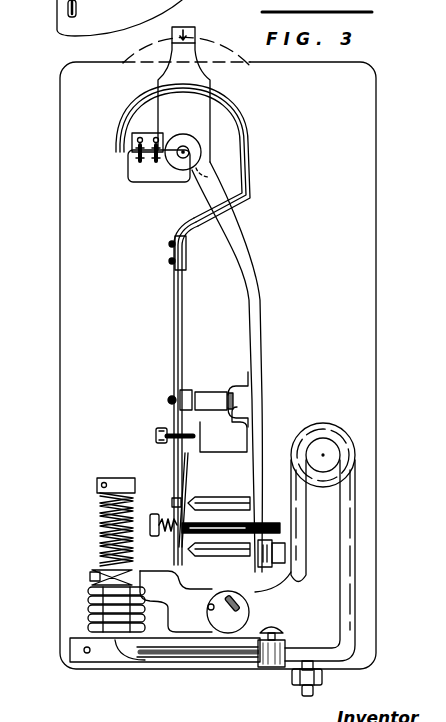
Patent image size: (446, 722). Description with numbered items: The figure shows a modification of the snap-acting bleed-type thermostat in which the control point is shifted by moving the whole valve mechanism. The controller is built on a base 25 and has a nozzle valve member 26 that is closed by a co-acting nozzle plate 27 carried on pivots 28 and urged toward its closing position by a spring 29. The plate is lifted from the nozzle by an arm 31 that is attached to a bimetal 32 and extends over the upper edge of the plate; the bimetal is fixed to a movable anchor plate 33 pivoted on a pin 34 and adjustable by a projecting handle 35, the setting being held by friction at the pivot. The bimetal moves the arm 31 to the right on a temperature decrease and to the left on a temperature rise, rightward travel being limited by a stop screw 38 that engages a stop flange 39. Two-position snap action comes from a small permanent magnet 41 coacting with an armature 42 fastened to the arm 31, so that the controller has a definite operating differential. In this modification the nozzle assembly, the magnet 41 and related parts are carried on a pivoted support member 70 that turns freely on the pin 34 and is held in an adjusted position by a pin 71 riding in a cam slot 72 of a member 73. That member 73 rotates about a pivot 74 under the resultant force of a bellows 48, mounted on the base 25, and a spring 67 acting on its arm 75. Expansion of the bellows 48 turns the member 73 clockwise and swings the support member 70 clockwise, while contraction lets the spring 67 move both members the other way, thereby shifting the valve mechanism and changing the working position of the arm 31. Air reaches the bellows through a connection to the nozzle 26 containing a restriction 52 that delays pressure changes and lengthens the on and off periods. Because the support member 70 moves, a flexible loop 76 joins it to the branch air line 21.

The base 25 is at (68, 174).
The projecting handle 35 is at (196, 36).
The movable anchor plate 33 is at (148, 170).
The pin 34 is at (189, 152).
The bimetal 32 is at (255, 163).
The arm 31 is at (180, 309).
The pivoted support member 70 is at (256, 311).
The armature 42 is at (184, 390).
The permanent magnet 41 is at (212, 398).
The stop flange 39 is at (201, 432).
The stop screw 38 is at (162, 428).
The nozzle plate 27 is at (187, 490).
The pivots 28 is at (214, 498).
The spring 29 is at (158, 514).
The spring 67 is at (98, 526).
The arm 75 is at (140, 572).
The bellows 48 is at (88, 607).
The member 73 is at (165, 645).
The cam slot 72 is at (176, 599).
The pivot 74 is at (210, 609).
The pin 71 is at (242, 608).
The nozzle valve member 26 is at (266, 567).
The loop 76 is at (320, 424).
The restriction 52 is at (283, 645).
The branch air line 21 is at (314, 693).